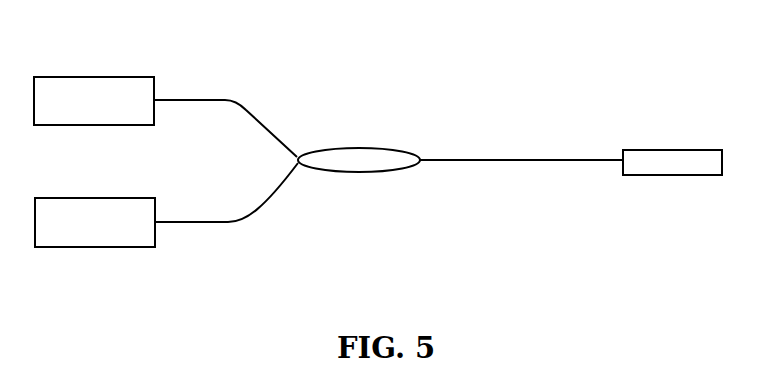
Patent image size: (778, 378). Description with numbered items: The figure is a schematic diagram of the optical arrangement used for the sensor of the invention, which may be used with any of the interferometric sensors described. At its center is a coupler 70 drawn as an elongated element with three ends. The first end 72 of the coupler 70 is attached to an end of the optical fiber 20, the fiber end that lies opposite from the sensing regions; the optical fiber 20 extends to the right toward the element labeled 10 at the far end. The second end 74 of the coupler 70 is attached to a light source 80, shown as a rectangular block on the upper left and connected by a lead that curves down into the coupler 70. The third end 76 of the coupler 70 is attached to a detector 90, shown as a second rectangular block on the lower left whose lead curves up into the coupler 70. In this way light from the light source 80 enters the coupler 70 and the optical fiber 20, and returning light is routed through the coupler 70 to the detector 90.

The target object 10 is at (681, 128).
The optical fiber 20 is at (563, 160).
The coupler 70 is at (358, 162).
The first end 72 is at (420, 160).
The second end 74 is at (287, 147).
The third end 76 is at (288, 172).
The light source 80 is at (93, 100).
The detector 90 is at (82, 222).